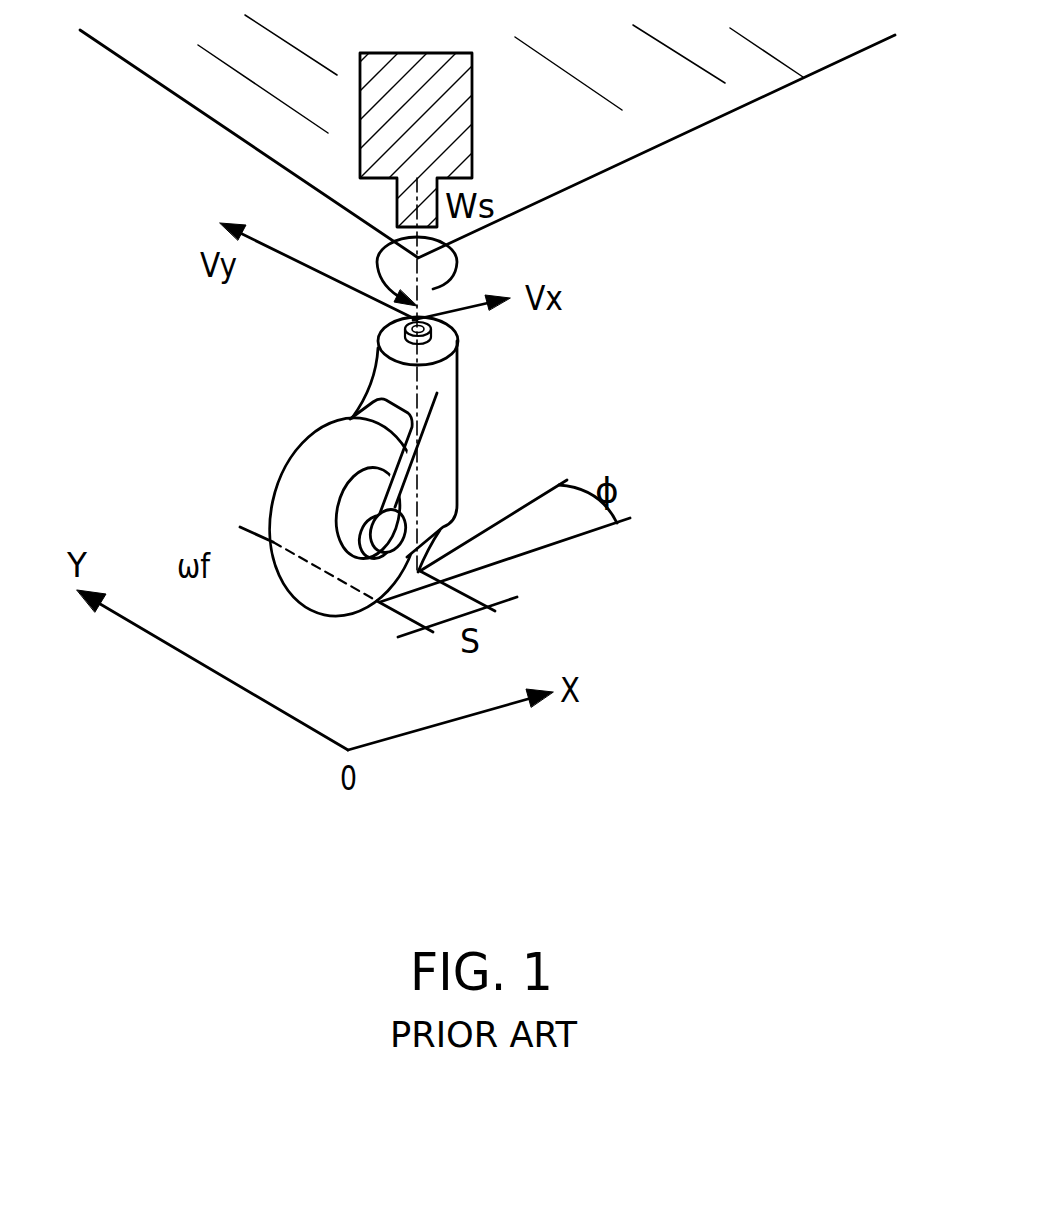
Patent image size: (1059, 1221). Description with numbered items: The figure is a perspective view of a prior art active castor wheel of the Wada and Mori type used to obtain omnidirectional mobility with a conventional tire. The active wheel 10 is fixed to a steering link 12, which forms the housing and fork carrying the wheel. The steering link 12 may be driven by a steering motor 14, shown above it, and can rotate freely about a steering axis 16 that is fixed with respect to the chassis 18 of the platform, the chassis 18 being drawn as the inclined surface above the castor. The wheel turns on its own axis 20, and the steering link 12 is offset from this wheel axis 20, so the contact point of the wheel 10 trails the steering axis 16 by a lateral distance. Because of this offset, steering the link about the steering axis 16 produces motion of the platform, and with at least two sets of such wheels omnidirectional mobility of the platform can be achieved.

The active wheel 10 is at (290, 477).
The steering link 12 is at (460, 470).
The steering motor 14 is at (473, 113).
The steering axis 16 is at (420, 311).
The chassis 18 is at (688, 108).
The wheel axis 20 is at (395, 527).